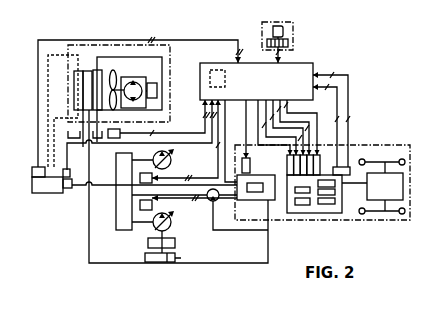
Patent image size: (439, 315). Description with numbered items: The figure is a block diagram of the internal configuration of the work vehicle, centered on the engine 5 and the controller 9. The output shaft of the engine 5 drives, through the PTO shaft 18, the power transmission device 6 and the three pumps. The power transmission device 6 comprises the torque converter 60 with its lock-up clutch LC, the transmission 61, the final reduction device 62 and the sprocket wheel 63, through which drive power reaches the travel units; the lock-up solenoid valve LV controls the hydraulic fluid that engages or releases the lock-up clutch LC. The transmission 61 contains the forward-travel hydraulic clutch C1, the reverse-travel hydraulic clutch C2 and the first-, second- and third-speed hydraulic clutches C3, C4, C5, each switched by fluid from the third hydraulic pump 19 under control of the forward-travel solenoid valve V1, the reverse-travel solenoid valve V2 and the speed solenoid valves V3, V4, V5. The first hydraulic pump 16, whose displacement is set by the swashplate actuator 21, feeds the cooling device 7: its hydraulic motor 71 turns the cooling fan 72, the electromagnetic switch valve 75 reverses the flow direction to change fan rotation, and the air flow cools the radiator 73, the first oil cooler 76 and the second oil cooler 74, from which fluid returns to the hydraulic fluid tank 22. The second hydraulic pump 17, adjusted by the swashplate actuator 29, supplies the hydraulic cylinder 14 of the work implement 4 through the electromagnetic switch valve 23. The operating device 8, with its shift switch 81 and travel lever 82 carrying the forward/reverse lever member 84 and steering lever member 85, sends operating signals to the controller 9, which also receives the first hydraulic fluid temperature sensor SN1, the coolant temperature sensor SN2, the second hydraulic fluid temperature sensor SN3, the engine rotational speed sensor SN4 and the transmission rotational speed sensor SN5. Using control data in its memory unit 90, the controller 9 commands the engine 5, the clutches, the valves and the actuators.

The work implement 4 is at (129, 246).
The engine 5 is at (57, 194).
The power transmission device 6 is at (381, 145).
The cooling device 7 is at (78, 45).
The operating device 8 is at (299, 34).
The controller 9 is at (200, 85).
The hydraulic cylinder 14 is at (145, 257).
The first hydraulic pump 16 is at (171, 160).
The second hydraulic pump 17 is at (154, 228).
The PTO shaft 18 is at (116, 213).
The third hydraulic pump 19 is at (207, 196).
The swashplate actuator 21 is at (152, 176).
The hydraulic fluid tank 22 is at (89, 150).
The electromagnetic switch valve 23 is at (175, 245).
The swashplate actuator 29 is at (143, 210).
The torque converter 60 is at (245, 200).
The transmission 61 is at (326, 213).
The final reduction device 62 is at (403, 187).
The sprocket wheel 63 is at (413, 211).
The hydraulic motor 71 is at (130, 106).
The cooling fan 72 is at (116, 74).
The radiator 73 is at (74, 85).
The second oil cooler 74 is at (97, 70).
The electromagnetic switch valve 75 is at (152, 98).
The first oil cooler 76 is at (86, 100).
The shift switch 81 is at (273, 30).
The travel lever 82 is at (262, 38).
The forward/reverse lever member 84 is at (267, 43).
The steering lever member 85 is at (281, 48).
The memory unit 90 is at (210, 77).
The first hydraulic fluid temperature sensor SN1 is at (114, 129).
The coolant temperature sensor SN2 is at (71, 173).
The second hydraulic fluid temperature sensor SN3 is at (339, 152).
The engine rotational speed sensor SN4 is at (68, 188).
The transmission rotational speed sensor SN5 is at (345, 167).
The lock-up solenoid valve LV is at (244, 156).
The lock-up clutch LC is at (256, 193).
The forward-travel solenoid valve V1 is at (287, 170).
The reverse-travel solenoid valve V2 is at (295, 163).
The first-speed solenoid valve V3 is at (302, 160).
The second-speed solenoid valve V4 is at (311, 163).
The third-speed solenoid valve V5 is at (316, 158).
The forward-travel hydraulic clutch C1 is at (295, 190).
The reverse-travel hydraulic clutch C2 is at (295, 202).
The first-speed hydraulic clutch C3 is at (318, 183).
The second-speed hydraulic clutch C4 is at (335, 192).
The third-speed hydraulic clutch C5 is at (335, 201).